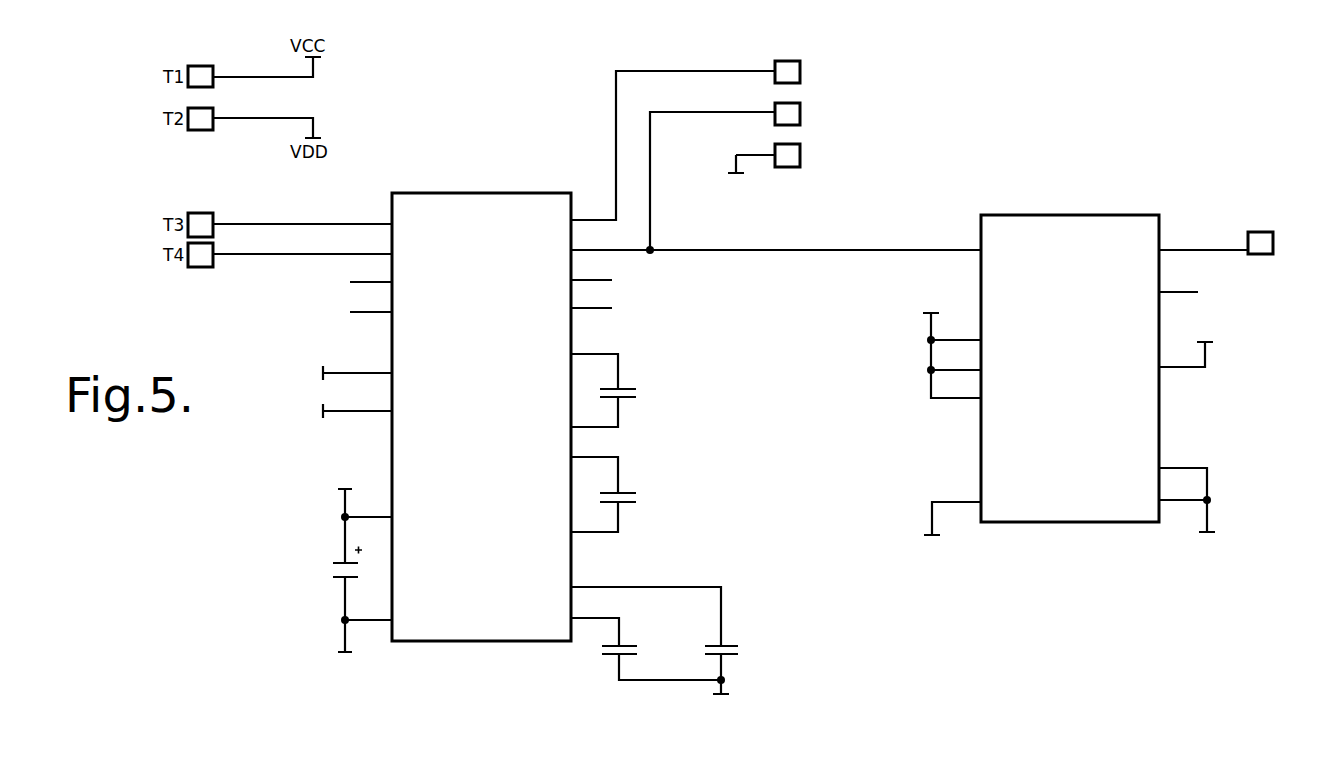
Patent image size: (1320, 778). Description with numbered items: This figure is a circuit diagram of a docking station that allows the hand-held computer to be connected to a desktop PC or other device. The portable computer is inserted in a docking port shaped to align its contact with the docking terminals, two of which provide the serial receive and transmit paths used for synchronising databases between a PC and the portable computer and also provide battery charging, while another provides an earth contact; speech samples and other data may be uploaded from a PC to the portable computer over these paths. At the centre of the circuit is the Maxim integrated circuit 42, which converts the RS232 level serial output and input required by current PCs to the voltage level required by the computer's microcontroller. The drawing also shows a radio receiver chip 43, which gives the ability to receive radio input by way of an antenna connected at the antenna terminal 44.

The Maxim integrated circuit 42 is at (537, 641).
The RF receiver module U3 AMHRR3-418 43 is at (1105, 215).
The antenna terminal T6 44 is at (1258, 254).